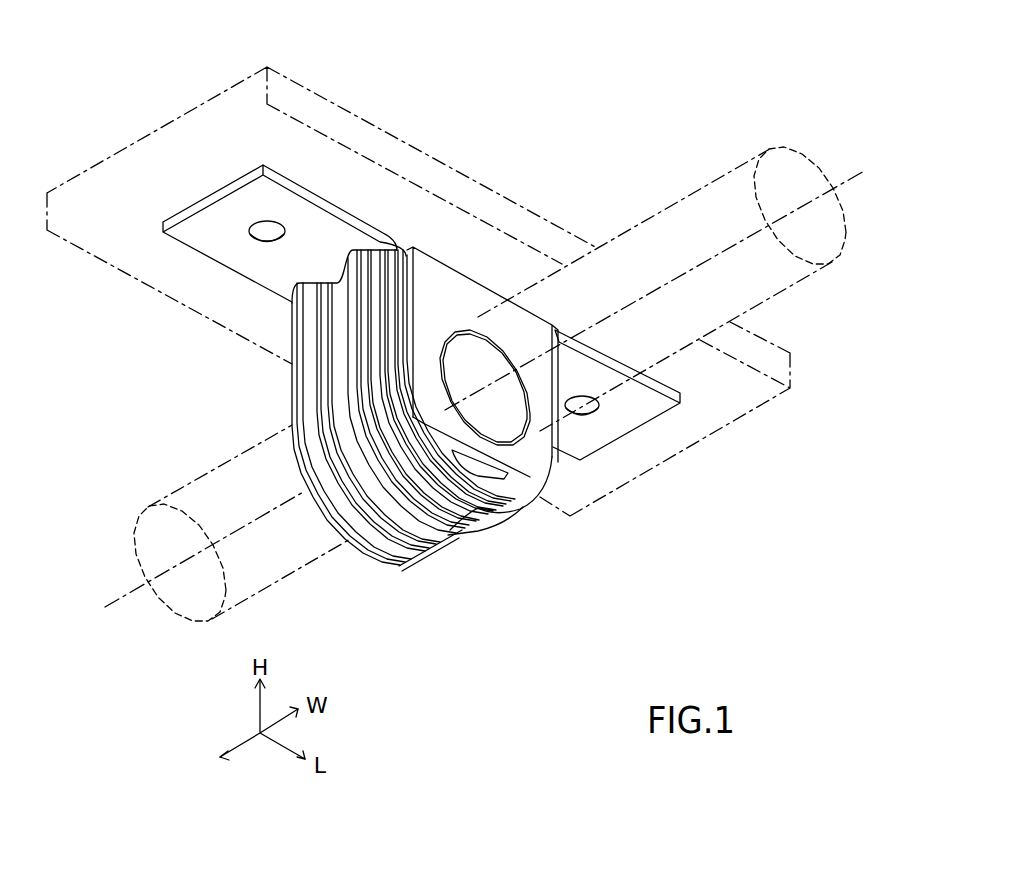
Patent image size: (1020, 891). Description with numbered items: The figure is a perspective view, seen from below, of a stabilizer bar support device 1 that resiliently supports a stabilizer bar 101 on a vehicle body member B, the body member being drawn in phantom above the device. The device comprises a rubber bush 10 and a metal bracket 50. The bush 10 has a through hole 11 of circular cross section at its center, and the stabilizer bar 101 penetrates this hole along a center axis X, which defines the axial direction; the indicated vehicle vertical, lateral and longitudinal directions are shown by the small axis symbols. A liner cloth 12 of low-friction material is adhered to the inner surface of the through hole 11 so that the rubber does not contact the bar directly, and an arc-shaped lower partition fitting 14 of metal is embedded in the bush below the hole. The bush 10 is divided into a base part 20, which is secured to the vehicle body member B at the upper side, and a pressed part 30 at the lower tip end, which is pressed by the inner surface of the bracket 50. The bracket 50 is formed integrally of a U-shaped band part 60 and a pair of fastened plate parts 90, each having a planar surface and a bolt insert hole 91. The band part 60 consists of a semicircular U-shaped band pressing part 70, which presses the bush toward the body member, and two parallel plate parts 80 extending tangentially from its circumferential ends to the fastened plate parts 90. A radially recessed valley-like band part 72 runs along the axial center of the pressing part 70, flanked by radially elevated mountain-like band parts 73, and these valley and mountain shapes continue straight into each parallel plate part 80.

The stabilizer bar support device 1 is at (557, 72).
The bush 10 is at (543, 361).
The through hole 11 is at (557, 452).
The liner cloth 12 is at (468, 340).
The lower partition fitting 14 is at (480, 473).
The base part 20 is at (560, 330).
The pressed part 30 is at (505, 493).
The bracket 50 is at (448, 360).
The U-shaped band part 60 is at (338, 528).
The U-shaped band pressing part 70 is at (404, 566).
The valley-like band part 72 is at (457, 571).
The mountain-like band part 73 is at (500, 526).
The parallel plate part 80 is at (302, 393).
The fastened plate part 90 is at (217, 252).
The bolt insert hole 91 is at (267, 242).
The stabilizer bar 101 is at (742, 163).
The vehicle body member B is at (303, 85).
The center axis X is at (493, 379).